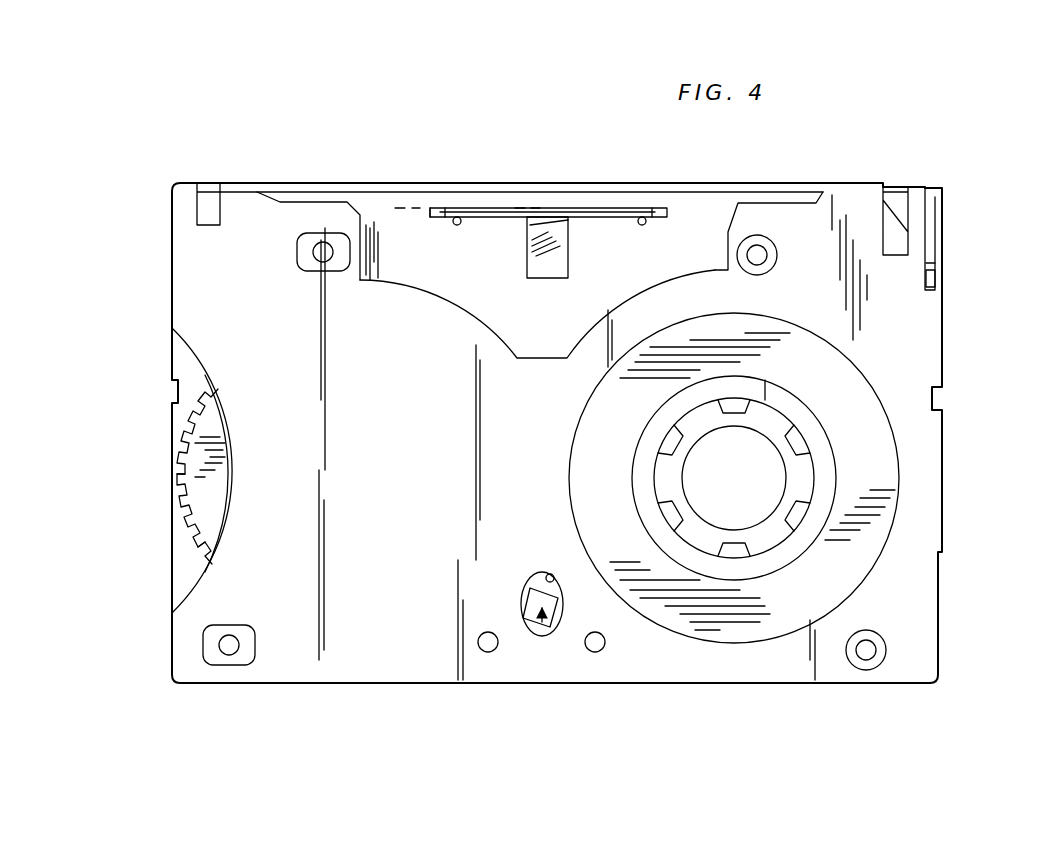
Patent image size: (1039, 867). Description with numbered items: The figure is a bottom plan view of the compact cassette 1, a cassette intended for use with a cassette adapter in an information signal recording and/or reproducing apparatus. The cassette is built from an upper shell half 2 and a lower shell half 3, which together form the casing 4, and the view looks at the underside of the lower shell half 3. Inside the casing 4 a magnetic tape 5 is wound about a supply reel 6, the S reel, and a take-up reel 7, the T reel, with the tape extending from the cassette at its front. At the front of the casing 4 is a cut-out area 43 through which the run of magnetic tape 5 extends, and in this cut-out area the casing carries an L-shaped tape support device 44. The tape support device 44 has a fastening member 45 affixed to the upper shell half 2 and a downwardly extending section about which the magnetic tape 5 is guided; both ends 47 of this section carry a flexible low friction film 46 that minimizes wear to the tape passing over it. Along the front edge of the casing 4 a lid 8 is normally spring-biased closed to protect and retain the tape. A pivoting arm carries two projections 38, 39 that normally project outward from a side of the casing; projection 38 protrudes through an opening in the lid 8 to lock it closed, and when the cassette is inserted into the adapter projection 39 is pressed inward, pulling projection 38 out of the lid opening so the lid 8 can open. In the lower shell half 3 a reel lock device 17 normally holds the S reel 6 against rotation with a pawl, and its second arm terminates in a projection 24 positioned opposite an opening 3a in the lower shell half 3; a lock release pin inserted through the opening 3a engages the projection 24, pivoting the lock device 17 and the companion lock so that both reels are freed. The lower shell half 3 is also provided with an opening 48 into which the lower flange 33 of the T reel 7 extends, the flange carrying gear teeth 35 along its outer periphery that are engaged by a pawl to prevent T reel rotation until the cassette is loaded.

The compact cassette 1 is at (962, 405).
The upper shell half 2 is at (700, 220).
The lower shell half 3 is at (922, 574).
The opening 3a is at (550, 576).
The casing 4 is at (672, 687).
The magnetic tape 5 is at (383, 205).
The supply reel 6 is at (762, 545).
The take-up reel 7 is at (205, 425).
The lid 8 is at (898, 188).
The reel lock device 17 is at (542, 613).
The projection 24 is at (537, 595).
The lower flange 33 is at (195, 495).
The gear teeth 35 is at (200, 540).
The projection 38 is at (946, 263).
The projection 39 is at (933, 280).
The cut-out area 43 is at (458, 305).
The L-shaped tape support device 44 is at (578, 259).
The fastening member 45 is at (548, 270).
The flexible low friction film 46 is at (457, 208).
The ends 47 is at (445, 208).
The opening 48 is at (210, 455).